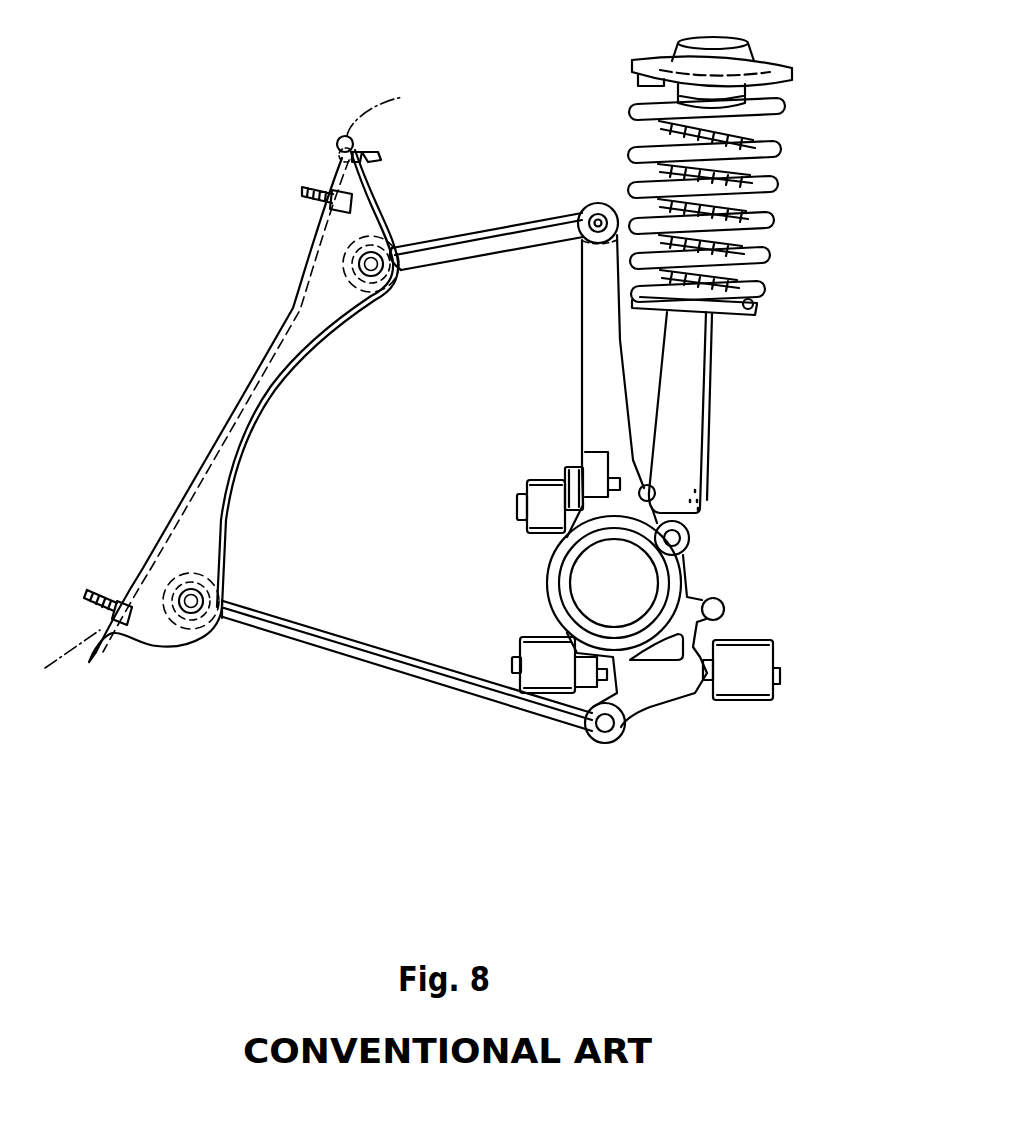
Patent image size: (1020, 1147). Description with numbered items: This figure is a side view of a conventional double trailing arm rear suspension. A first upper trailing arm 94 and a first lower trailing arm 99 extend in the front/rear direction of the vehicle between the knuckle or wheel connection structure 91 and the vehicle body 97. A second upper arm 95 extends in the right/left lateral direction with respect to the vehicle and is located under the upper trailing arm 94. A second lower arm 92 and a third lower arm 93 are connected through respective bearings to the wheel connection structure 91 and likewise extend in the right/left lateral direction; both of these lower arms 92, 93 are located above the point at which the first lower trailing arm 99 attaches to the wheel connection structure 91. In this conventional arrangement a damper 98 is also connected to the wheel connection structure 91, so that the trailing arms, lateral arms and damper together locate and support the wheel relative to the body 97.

The wheel connection structure 91 is at (548, 582).
The second lower arm 92 is at (752, 667).
The third lower arm 93 is at (533, 648).
The first upper trailing arm 94 is at (517, 232).
The second upper arm 95 is at (535, 478).
The vehicle body 97 is at (323, 303).
The damper 98 is at (777, 113).
The first lower trailing arm 99 is at (363, 653).